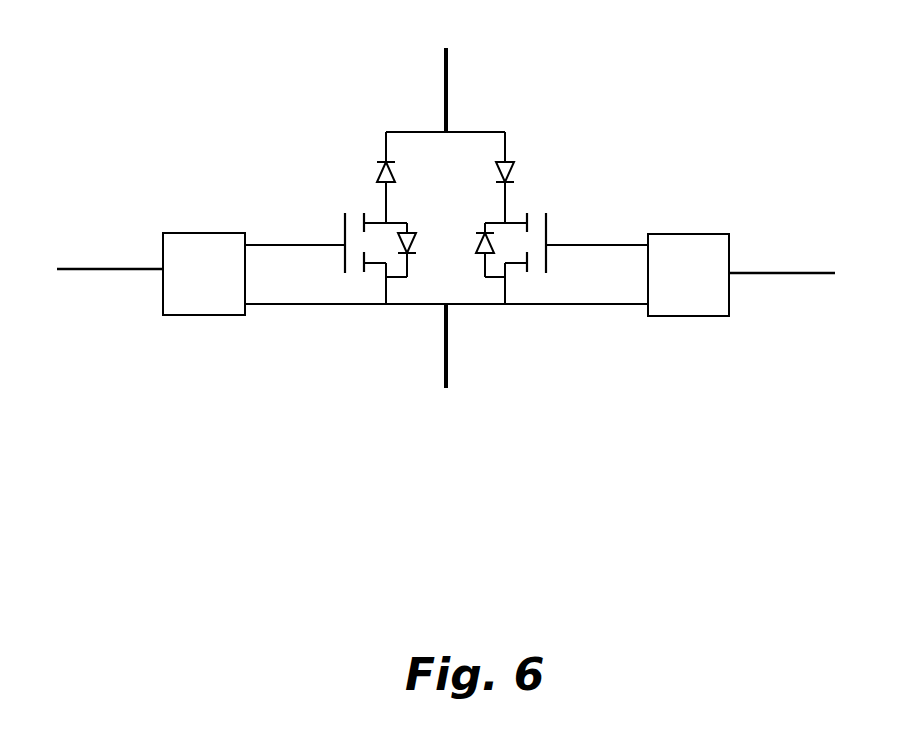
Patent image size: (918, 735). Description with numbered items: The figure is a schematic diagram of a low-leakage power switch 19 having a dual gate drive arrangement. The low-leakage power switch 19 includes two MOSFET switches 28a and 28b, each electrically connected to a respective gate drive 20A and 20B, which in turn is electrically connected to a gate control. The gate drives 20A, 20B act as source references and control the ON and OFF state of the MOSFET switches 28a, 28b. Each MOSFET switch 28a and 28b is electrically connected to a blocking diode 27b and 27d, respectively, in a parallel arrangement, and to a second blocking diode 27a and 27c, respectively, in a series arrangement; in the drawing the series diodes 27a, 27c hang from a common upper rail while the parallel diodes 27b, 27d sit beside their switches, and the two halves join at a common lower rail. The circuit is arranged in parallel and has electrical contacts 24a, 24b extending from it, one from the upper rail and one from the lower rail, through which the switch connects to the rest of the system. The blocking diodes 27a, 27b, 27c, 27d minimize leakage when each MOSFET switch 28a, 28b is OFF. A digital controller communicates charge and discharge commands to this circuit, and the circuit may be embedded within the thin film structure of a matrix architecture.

The low-leakage power switch 19 is at (615, 89).
The gate drive 20A is at (192, 230).
The gate drive 20B is at (702, 232).
The electrical contact 24a is at (414, 90).
The electrical contact 24b is at (472, 346).
The second blocking diode 27a is at (356, 177).
The blocking diode 27b is at (419, 234).
The second blocking diode 27c is at (527, 177).
The blocking diode 27d is at (473, 259).
The MOSFET switch 28a is at (342, 258).
The MOSFET switch 28b is at (550, 255).